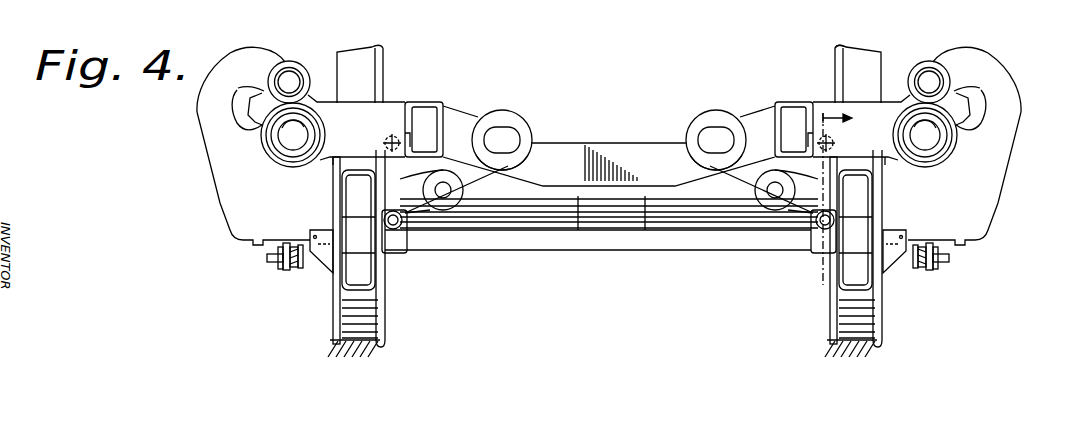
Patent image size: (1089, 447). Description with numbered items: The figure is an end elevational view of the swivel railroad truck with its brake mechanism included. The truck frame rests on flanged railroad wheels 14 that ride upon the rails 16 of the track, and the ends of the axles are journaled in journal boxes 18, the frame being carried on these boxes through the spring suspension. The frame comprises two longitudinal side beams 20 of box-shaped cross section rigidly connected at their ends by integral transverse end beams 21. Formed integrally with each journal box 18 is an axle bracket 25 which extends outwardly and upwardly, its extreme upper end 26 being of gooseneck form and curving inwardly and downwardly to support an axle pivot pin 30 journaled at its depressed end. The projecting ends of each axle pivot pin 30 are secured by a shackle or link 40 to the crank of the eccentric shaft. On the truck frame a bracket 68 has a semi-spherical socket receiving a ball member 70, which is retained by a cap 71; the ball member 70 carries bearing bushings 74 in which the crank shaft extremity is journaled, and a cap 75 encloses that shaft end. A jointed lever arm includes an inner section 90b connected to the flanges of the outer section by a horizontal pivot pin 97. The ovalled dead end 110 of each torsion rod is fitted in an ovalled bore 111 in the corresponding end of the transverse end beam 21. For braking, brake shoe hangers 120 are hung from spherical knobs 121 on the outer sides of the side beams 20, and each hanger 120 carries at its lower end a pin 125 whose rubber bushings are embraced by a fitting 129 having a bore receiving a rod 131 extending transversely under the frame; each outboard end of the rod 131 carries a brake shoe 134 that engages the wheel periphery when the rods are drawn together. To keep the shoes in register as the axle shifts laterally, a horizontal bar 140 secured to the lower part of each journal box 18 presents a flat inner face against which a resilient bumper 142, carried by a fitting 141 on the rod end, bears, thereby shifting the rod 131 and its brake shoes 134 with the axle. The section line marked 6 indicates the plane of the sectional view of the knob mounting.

The section line 6- 6 is at (800, 285).
The flanged railroad wheel 14 is at (384, 44).
The rail 16 is at (373, 360).
The journal box 18 is at (280, 205).
The longitudinal side beam 20 is at (428, 100).
The transverse end beam 21 is at (623, 125).
The axle bracket 25 is at (213, 142).
The extreme upper end of axle bracket 26 is at (265, 40).
The axle pivot pin 30 is at (295, 67).
The shackle or link 40 is at (262, 96).
The bracket 68 is at (368, 95).
The ball member 70 is at (748, 100).
The cap 71 is at (266, 156).
The bearing bushing 74 is at (835, 44).
The cap 75 is at (308, 135).
The inner section of lever arm 90b is at (481, 182).
The horizontal pivot pin 97 is at (450, 195).
The dead end of torsion rod 110 is at (493, 137).
The ovalled bore 111 is at (510, 132).
The brake shoe hanger 120 is at (392, 165).
The spherical knob 121 is at (397, 128).
The pin 125 is at (407, 232).
The fitting 129 is at (397, 253).
The rod 131 is at (567, 248).
The brake shoe 134 is at (357, 290).
The horizontal bar 140 is at (272, 262).
The fitting 141 is at (322, 282).
The resilient bumper 142 is at (299, 270).